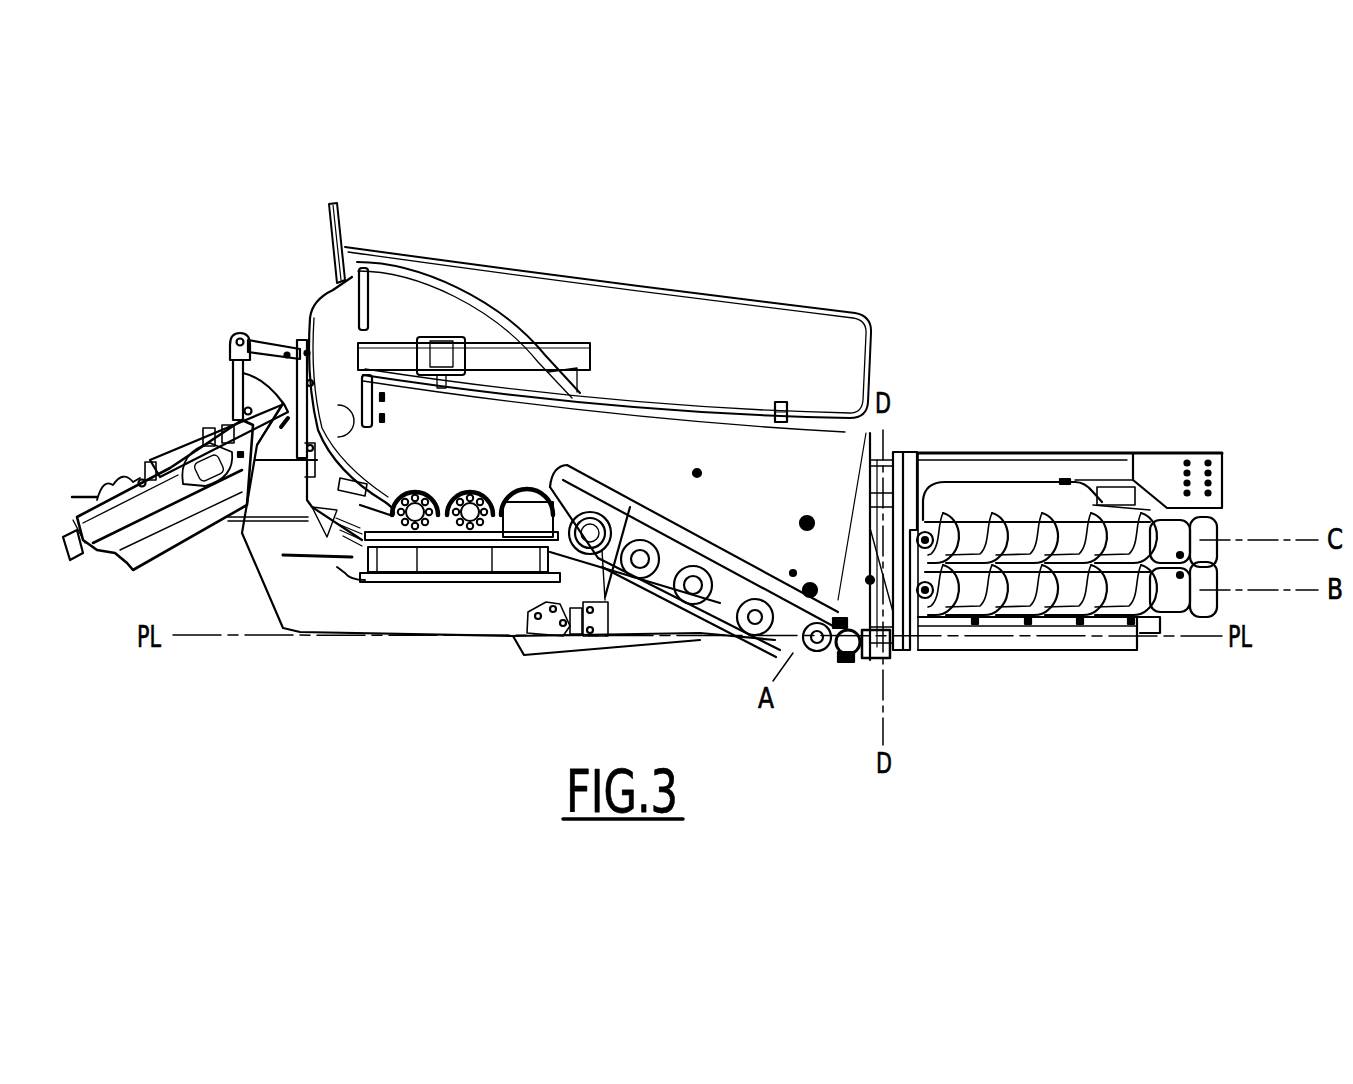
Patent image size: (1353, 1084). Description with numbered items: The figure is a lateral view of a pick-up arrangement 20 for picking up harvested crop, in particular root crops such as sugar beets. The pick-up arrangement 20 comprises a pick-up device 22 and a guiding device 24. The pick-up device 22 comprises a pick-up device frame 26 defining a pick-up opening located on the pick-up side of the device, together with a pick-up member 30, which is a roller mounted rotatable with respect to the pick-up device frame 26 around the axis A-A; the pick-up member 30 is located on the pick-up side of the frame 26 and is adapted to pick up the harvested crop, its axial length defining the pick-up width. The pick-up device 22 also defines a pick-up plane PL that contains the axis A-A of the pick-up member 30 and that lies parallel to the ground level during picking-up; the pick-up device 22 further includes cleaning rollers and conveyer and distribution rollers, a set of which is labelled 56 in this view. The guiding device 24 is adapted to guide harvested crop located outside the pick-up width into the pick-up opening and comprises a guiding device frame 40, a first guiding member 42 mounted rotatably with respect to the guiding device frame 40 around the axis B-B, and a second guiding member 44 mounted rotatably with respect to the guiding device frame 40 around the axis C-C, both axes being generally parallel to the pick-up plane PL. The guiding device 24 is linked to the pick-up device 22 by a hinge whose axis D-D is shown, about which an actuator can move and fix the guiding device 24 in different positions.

The pick-up arrangement 20 is at (1005, 232).
The pick-up device 22 is at (600, 232).
The guiding device 24 is at (952, 443).
The pick-up device frame 26 is at (424, 610).
The pick-up member 30 is at (825, 665).
The guiding device frame 40 is at (1013, 470).
The first guiding member 42 is at (1110, 593).
The second guiding member 44 is at (1068, 537).
The rollers 56 is at (522, 490).